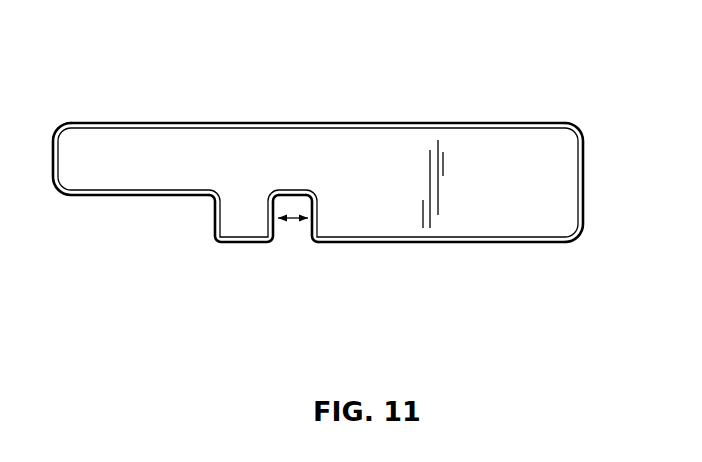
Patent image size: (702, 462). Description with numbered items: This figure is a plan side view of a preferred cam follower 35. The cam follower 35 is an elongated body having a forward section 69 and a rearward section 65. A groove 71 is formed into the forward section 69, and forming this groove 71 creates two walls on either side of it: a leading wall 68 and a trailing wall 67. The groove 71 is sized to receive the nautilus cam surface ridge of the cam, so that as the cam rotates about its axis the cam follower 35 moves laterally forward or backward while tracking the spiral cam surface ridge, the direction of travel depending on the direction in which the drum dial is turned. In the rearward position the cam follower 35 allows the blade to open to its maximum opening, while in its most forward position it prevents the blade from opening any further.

The cam follower 35 is at (503, 126).
The rearward section 65 is at (110, 123).
The trailing wall 67 is at (279, 235).
The leading wall 68 is at (315, 245).
The forward section 69 is at (460, 243).
The groove 71 is at (293, 217).